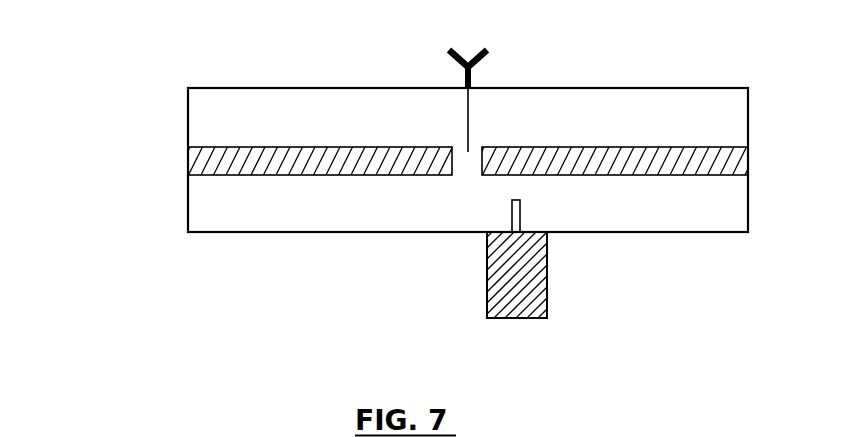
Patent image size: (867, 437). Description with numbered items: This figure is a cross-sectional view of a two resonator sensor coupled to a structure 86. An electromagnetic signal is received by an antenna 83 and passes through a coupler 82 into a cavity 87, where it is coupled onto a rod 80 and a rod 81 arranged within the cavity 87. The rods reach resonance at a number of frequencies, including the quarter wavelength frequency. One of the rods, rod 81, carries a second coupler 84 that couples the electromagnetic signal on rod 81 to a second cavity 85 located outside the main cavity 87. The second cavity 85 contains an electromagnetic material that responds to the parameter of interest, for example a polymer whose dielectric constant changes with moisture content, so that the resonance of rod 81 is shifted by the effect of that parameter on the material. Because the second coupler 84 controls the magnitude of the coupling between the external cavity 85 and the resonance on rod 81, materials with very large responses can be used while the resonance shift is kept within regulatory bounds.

The rod 80 is at (258, 153).
The rod 81 is at (688, 152).
The coupler 82 is at (470, 131).
The antenna 83 is at (488, 63).
The second coupler 84 is at (520, 212).
The second cavity 85 is at (547, 285).
The structure 86 is at (57, 217).
The cavity 87 is at (386, 88).